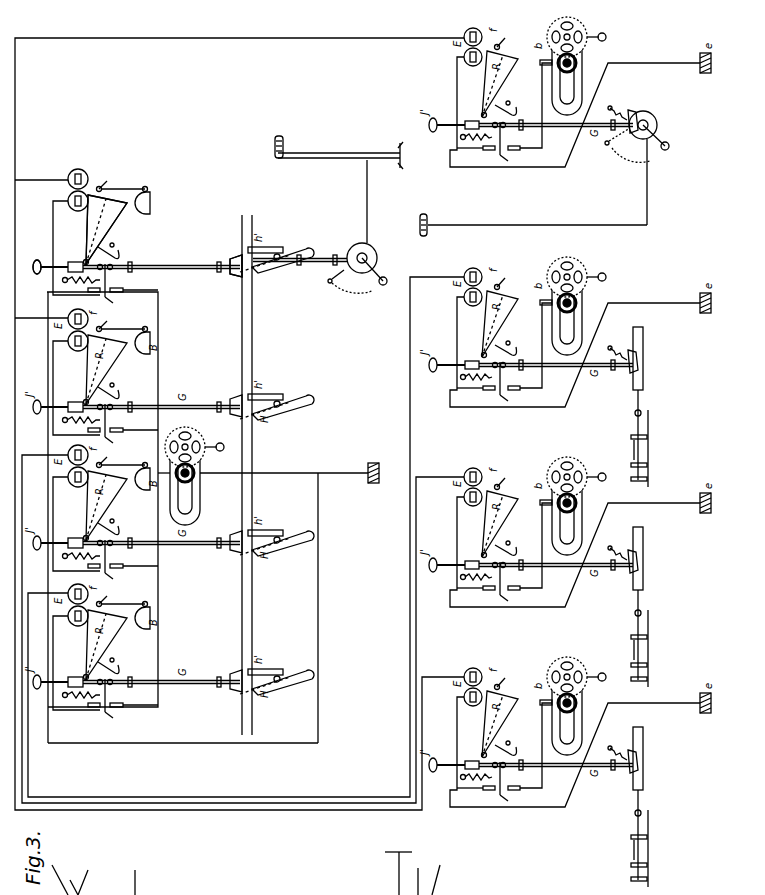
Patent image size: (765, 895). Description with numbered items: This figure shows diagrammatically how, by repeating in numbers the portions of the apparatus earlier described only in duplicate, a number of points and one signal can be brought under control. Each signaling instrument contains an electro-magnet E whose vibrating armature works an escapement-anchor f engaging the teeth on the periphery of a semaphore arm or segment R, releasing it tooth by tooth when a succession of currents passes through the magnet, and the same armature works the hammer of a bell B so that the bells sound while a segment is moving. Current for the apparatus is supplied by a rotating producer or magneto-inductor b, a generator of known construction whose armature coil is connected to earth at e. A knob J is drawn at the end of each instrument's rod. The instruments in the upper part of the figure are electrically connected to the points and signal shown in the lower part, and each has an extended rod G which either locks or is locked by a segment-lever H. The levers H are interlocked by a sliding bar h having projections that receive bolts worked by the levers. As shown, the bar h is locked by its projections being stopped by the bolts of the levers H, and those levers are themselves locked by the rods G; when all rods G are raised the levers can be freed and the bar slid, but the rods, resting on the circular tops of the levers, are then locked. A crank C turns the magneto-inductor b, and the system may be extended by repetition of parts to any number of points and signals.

The electro-magnet E is at (70, 190).
The escapement-anchor f is at (115, 217).
The semaphore arm or segment R is at (106, 229).
The bell B is at (147, 201).
The knob J is at (32, 262).
The extended rod G is at (137, 265).
The segment-lever H is at (250, 269).
The sliding bar h is at (240, 475).
The rotating producer or magneto-inductor b is at (194, 476).
The earth connection e is at (375, 467).
The crank wheel C is at (631, 136).